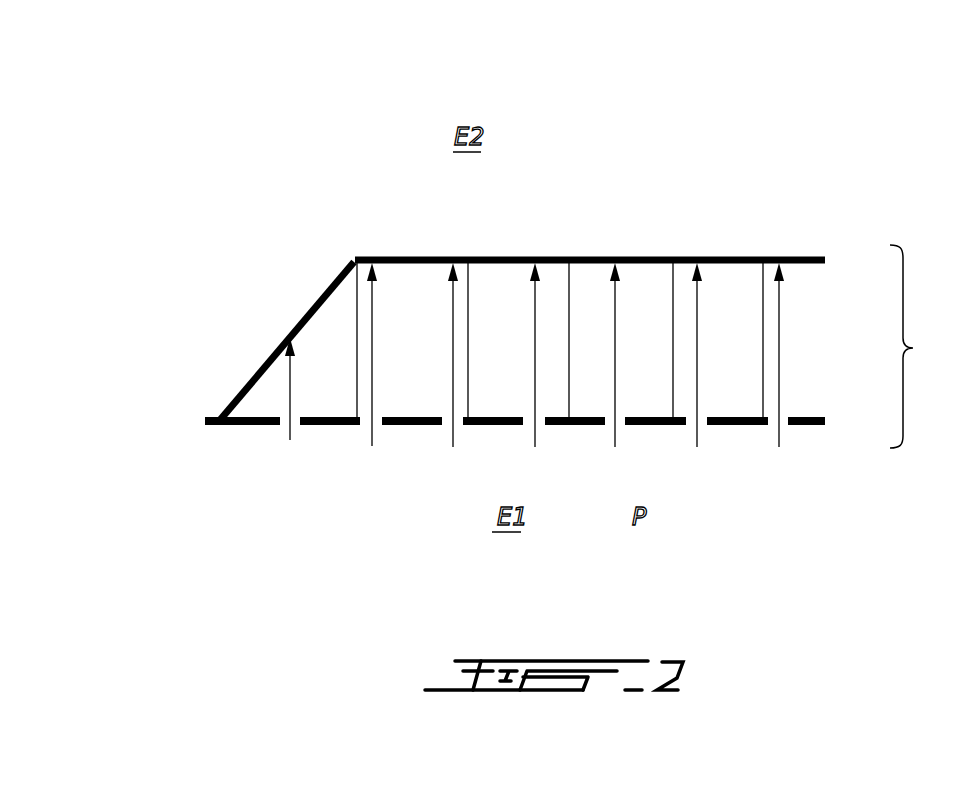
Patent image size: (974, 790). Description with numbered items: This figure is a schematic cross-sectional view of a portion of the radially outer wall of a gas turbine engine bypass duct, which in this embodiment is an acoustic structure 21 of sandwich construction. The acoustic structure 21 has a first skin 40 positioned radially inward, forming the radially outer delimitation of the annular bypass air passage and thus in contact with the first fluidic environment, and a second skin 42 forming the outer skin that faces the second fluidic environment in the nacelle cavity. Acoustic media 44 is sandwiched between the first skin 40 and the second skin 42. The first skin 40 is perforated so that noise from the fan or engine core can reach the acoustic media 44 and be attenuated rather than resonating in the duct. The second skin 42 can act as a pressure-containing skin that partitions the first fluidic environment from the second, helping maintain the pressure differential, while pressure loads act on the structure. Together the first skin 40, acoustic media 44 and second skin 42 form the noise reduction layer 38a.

The acoustic structure 21 is at (287, 190).
The second skin 42 is at (663, 257).
The first skin 40 is at (370, 446).
The acoustic media 44 is at (432, 385).
The noise reduction layer 38a is at (927, 346).